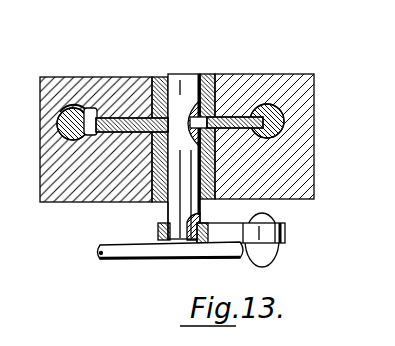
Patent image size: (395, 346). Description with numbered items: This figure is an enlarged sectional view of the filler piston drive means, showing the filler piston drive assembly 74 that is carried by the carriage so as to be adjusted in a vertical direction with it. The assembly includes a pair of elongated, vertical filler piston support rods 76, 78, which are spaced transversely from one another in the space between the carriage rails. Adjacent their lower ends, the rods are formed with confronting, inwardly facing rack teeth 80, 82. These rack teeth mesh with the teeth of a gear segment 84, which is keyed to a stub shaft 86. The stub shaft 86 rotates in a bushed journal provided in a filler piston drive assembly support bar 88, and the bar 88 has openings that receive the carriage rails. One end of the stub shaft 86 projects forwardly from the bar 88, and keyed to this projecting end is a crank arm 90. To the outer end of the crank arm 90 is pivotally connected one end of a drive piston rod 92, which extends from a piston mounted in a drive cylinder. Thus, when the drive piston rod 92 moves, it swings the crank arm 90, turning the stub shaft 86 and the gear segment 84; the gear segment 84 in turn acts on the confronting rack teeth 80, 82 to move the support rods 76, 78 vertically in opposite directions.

The filler piston drive assembly 74 is at (62, 100).
The filler piston support rod 76 is at (78, 109).
The filler piston support rod 78 is at (270, 102).
The rack teeth 80 is at (90, 110).
The rack teeth 82 is at (247, 110).
The gear segment 84 is at (128, 100).
The stub shaft 86 is at (178, 80).
The filler piston drive assembly support bar 88 is at (300, 77).
The crank arm 90 is at (227, 258).
The drive piston rod 92 is at (140, 252).